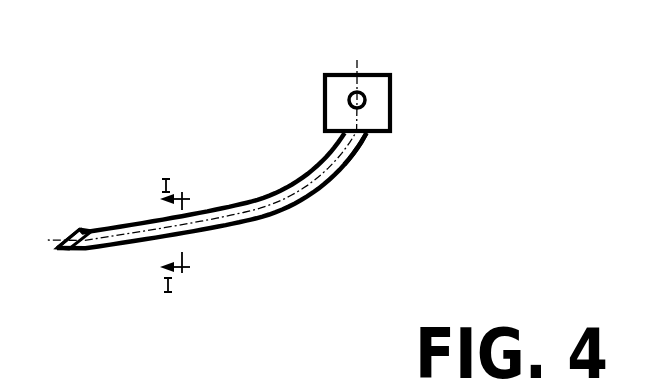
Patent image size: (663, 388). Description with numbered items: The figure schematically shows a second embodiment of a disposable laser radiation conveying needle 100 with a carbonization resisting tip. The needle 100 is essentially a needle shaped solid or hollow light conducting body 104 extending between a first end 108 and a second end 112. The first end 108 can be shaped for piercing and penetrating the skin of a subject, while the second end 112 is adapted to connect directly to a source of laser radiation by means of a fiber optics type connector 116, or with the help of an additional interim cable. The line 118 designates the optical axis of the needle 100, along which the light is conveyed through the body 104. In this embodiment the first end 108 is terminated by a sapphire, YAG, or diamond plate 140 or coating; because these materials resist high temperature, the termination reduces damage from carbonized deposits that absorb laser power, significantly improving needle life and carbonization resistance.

The needle 100 is at (209, 112).
The light conducting body 104 is at (273, 214).
The first end 108 is at (58, 215).
The second end 112 is at (418, 107).
The fiber optics type connector 116 is at (343, 85).
The optical axis 118 is at (349, 158).
The plate 140 is at (73, 248).